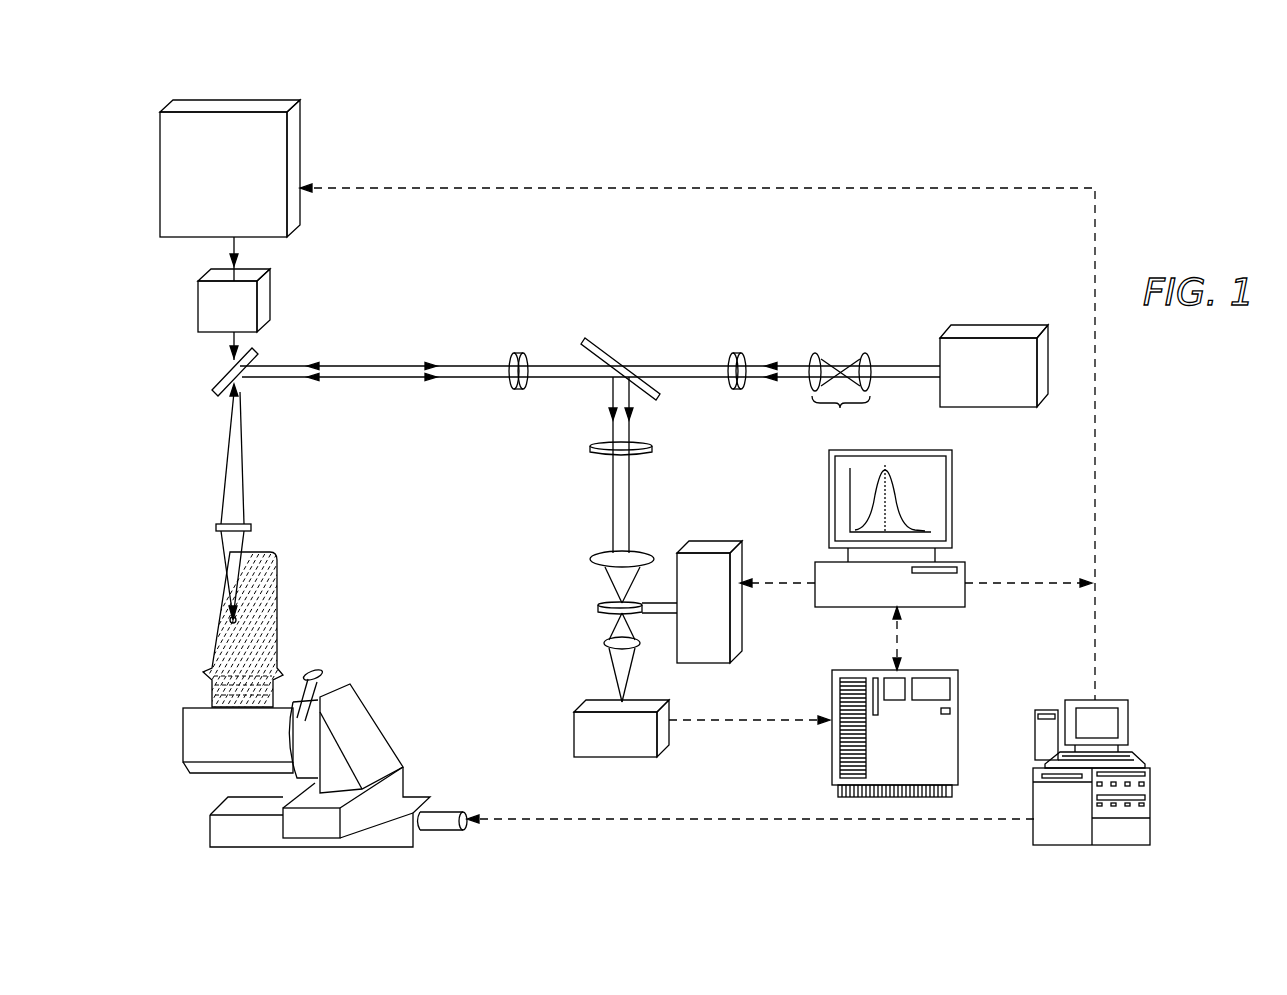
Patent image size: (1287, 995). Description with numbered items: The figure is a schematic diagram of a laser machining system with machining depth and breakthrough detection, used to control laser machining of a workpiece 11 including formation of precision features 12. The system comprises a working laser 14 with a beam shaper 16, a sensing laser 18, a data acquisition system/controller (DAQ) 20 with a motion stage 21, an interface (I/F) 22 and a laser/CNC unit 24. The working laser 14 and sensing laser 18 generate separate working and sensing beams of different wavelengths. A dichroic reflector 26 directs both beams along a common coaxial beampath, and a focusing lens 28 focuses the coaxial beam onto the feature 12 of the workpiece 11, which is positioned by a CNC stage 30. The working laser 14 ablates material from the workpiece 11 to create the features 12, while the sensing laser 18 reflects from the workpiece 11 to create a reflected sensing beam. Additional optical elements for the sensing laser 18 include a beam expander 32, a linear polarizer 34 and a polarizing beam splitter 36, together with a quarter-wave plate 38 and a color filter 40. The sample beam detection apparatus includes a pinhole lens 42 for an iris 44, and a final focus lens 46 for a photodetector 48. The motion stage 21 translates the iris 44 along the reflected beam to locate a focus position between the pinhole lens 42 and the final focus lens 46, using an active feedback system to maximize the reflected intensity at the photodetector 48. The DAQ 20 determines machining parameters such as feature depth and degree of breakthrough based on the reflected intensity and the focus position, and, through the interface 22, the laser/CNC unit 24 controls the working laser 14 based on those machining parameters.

The workpiece 11 is at (282, 590).
The precision feature 12 is at (222, 597).
The working laser 14 is at (297, 157).
The beam shaper 16 is at (265, 290).
The sensing laser 18 is at (1000, 330).
The data acquisition system/controller 20 is at (952, 506).
The motion stage 21 is at (710, 541).
The interface 22 is at (958, 727).
The laser/CNC unit 24 is at (1128, 722).
The dichroic reflector 26 is at (260, 350).
The focusing lens 28 is at (245, 527).
The CNC stage 30 is at (362, 730).
The beam expander 32 is at (840, 395).
The linear polarizer 34 is at (737, 392).
The polarizing beam splitter 36 is at (585, 343).
The quarter-wave plate 38 is at (517, 390).
The color filter 40 is at (590, 450).
The pinhole lens 42 is at (590, 561).
The iris 44 is at (597, 608).
The final focus lens 46 is at (603, 642).
The photodetector 48 is at (574, 731).